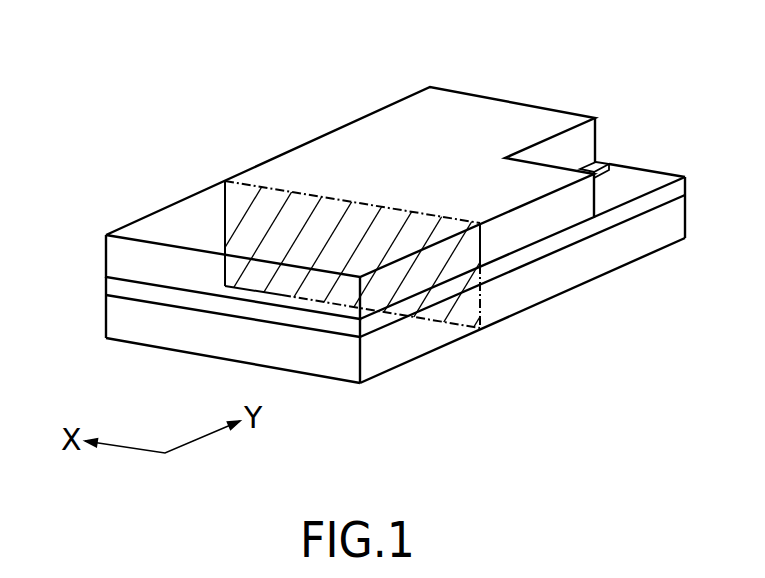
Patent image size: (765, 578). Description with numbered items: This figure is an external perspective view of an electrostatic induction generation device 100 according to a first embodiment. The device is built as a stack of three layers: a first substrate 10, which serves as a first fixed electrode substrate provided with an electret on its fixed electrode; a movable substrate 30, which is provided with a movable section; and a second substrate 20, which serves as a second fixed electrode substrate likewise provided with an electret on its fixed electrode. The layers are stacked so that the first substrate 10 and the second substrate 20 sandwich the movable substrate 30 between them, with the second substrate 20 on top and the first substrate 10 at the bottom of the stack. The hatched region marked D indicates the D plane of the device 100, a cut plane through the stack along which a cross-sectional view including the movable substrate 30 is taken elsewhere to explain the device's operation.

The electrostatic induction generation device 100 is at (606, 70).
The first substrate 10 is at (118, 318).
The second substrate 20 is at (118, 253).
The movable substrate 30 is at (118, 286).
The D plane D is at (256, 187).